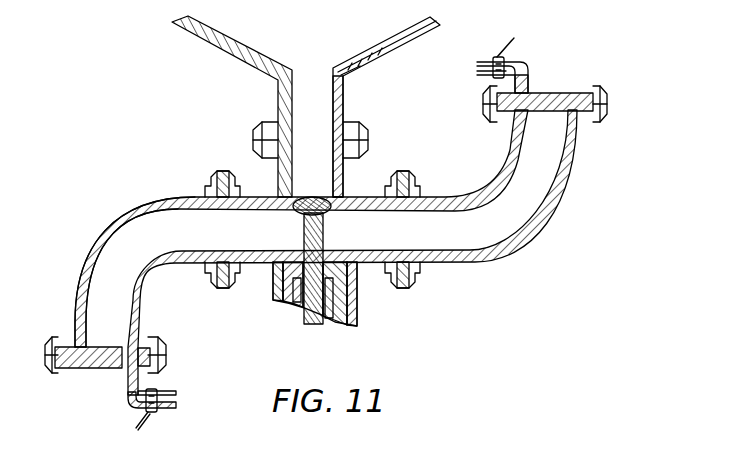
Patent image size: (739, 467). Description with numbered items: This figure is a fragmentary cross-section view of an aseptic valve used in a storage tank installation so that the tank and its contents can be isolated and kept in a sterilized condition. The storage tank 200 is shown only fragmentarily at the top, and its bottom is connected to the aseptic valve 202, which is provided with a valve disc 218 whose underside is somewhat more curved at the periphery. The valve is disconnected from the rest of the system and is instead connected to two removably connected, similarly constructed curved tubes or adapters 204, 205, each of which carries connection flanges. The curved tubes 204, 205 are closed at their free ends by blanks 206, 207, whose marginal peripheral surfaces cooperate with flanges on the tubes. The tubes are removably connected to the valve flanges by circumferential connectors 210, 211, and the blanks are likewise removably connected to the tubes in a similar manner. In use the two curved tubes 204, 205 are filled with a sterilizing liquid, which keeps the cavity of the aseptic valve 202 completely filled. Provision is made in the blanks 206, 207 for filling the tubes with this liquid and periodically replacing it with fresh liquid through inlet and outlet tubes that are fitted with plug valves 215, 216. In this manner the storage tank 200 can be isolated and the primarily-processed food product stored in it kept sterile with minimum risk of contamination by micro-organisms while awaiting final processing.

The storage tank 200 is at (372, 60).
The aseptic valve 202 is at (360, 166).
The curved tube 204 is at (456, 262).
The curved tube 205 is at (116, 232).
The blank 206 is at (566, 92).
The blank 207 is at (92, 370).
The circumferential connector 210 is at (216, 288).
The right lower fastening nut 211 is at (397, 290).
The plug valve 215 is at (490, 50).
The plug valve 216 is at (160, 416).
The valve disc 218 is at (326, 212).